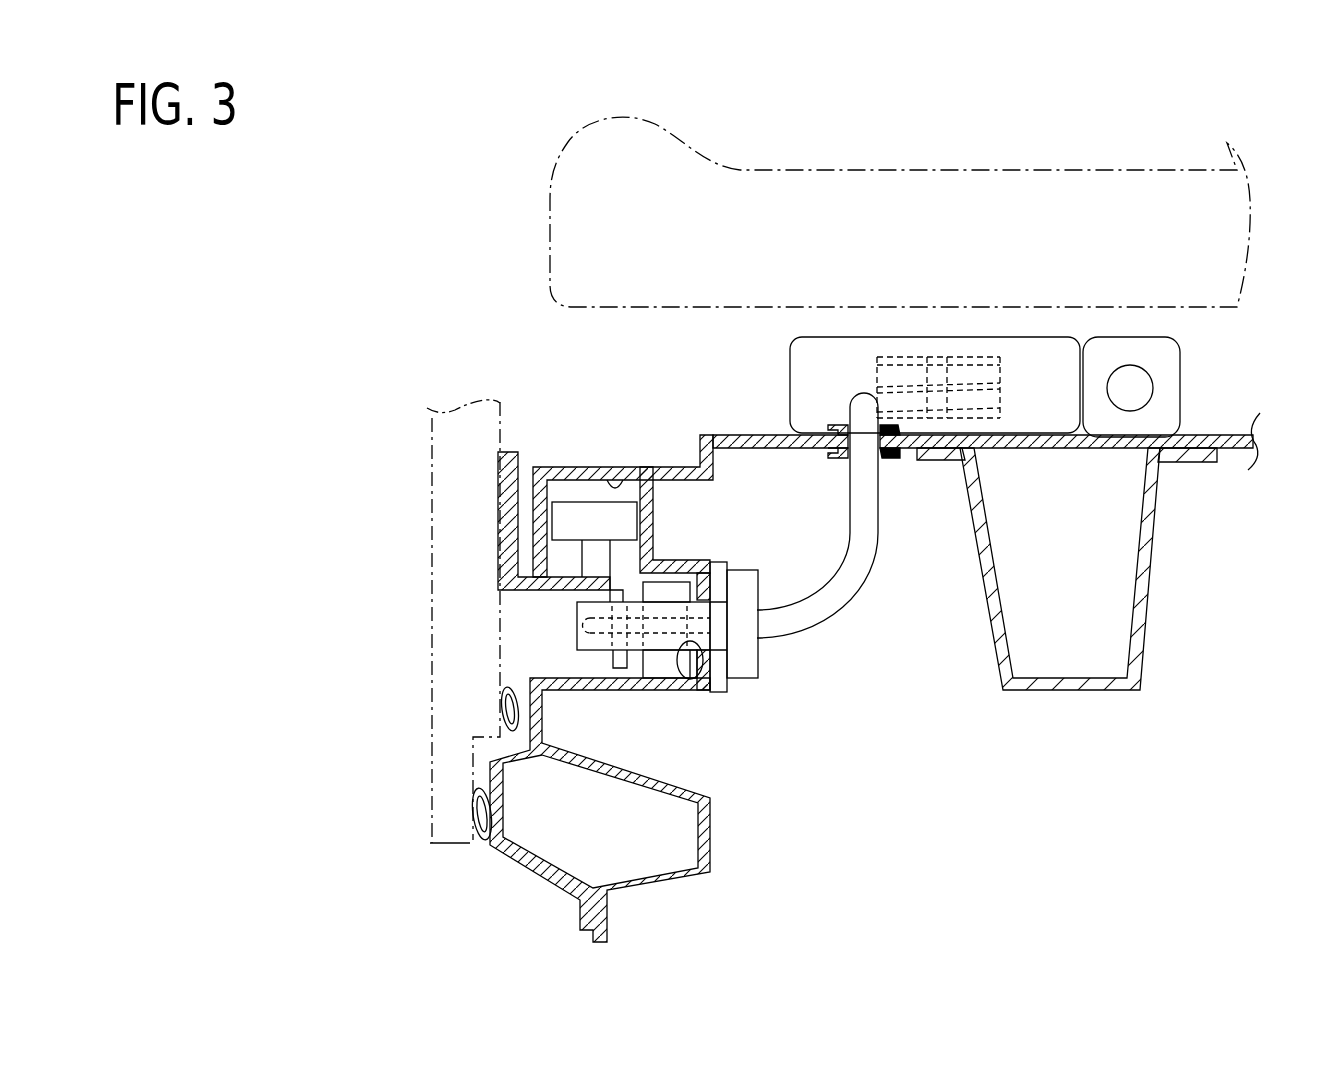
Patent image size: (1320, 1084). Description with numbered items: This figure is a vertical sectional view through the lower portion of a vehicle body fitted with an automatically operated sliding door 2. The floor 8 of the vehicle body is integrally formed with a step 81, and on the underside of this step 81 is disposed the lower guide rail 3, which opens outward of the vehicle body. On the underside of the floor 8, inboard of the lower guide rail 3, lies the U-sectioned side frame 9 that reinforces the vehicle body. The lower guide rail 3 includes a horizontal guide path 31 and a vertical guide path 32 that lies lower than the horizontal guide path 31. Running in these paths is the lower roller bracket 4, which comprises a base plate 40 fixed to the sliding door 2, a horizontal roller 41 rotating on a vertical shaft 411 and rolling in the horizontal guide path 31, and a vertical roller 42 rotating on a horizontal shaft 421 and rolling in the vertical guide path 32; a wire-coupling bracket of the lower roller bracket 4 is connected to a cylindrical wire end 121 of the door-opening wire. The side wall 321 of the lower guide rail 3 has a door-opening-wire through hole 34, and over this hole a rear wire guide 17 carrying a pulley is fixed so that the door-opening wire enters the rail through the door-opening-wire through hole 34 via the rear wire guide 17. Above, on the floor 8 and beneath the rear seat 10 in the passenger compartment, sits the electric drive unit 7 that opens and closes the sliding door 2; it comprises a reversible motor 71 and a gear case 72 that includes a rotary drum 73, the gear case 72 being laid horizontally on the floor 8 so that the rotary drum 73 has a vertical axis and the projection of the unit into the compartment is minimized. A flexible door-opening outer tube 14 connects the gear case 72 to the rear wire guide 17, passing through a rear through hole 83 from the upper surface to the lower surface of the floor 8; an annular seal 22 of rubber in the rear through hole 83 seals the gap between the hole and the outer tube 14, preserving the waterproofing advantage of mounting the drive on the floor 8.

The sliding door 2 is at (424, 439).
The lower guide rail 3 is at (660, 506).
The lower roller bracket 4 is at (495, 488).
The electric drive unit 7 is at (985, 317).
The floor 8 is at (1214, 430).
The side frame 9 is at (1164, 573).
The rear seat 10 is at (1042, 166).
The door-opening outer tube 14 is at (850, 405).
The rear wire guide 17 is at (590, 655).
The annular seal 22 is at (840, 426).
The horizontal guide path 31 is at (615, 486).
The vertical guide path 32 is at (674, 570).
The door-opening-wire through hole 34 is at (682, 680).
The base plate 40 is at (510, 590).
The horizontal roller 41 is at (501, 500).
The vertical roller 42 is at (652, 678).
The motor 71 is at (1135, 337).
The gear case 72 is at (890, 335).
The rotary drum 73 is at (963, 353).
The step 81 is at (585, 467).
The rear through hole 83 is at (880, 452).
The cylindrical wire end 121 is at (590, 628).
The side wall 321 is at (727, 668).
The vertical shaft 411 is at (580, 556).
The horizontal shaft 421 is at (637, 646).